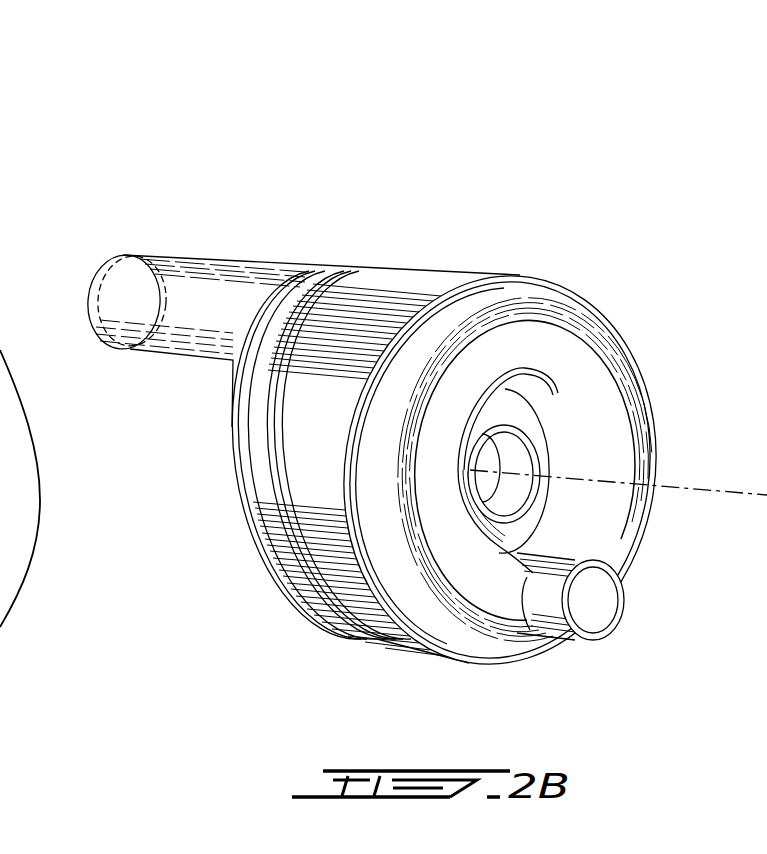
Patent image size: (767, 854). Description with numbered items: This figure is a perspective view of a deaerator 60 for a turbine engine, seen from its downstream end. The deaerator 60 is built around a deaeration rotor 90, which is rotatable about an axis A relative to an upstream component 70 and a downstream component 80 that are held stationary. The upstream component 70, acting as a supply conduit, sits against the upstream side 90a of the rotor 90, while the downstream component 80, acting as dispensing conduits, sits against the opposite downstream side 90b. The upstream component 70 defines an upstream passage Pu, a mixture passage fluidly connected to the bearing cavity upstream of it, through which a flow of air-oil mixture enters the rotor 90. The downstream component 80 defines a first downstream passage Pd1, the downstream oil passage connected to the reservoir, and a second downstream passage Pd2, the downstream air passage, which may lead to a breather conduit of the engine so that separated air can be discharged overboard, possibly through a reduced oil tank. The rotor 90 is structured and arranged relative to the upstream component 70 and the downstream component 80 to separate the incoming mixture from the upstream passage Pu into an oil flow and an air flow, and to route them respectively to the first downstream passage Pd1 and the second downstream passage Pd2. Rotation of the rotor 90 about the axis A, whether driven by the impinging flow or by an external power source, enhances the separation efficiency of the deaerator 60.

The deaerator 60 is at (259, 153).
The upstream component 70 is at (290, 612).
The downstream component 80 is at (492, 648).
The deaeration rotor 90 is at (378, 634).
The upstream side 90a is at (370, 259).
The downstream side 90b is at (499, 438).
The upstream passage Pu is at (92, 280).
The first downstream passage Pd1 is at (588, 600).
The second downstream passage Pd2 is at (506, 493).
The axis A is at (740, 492).